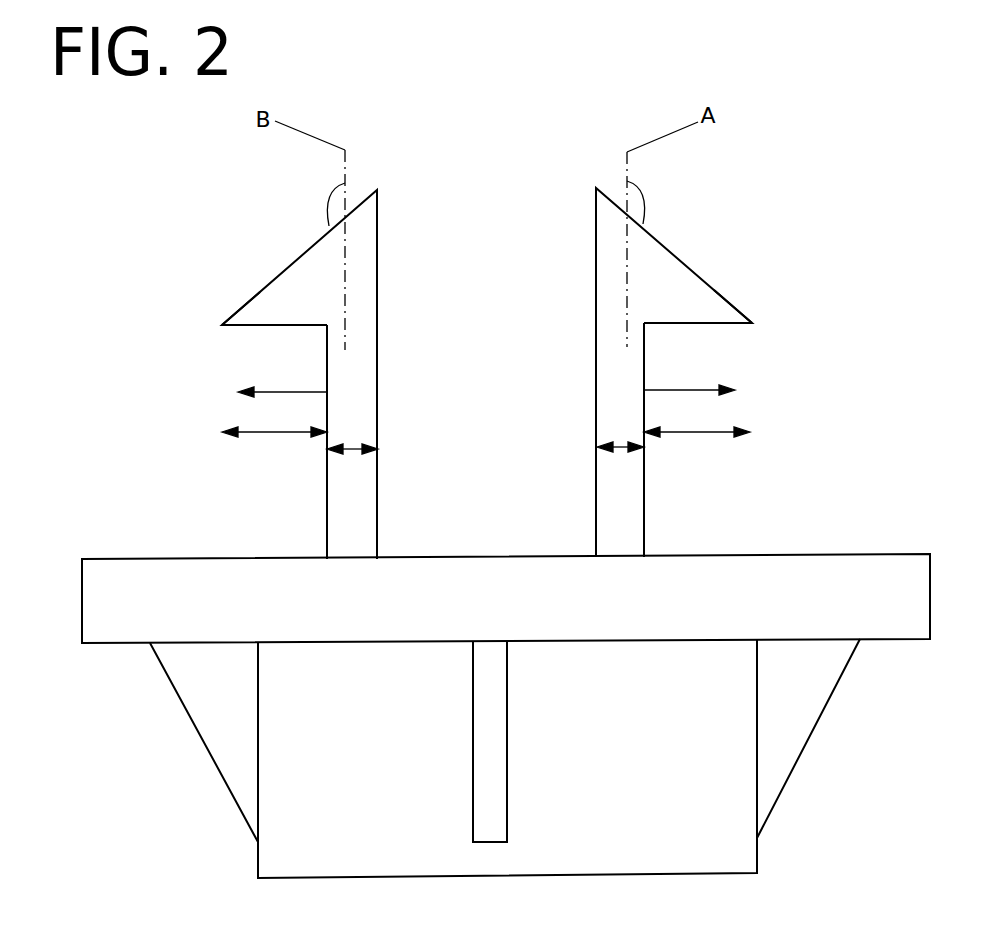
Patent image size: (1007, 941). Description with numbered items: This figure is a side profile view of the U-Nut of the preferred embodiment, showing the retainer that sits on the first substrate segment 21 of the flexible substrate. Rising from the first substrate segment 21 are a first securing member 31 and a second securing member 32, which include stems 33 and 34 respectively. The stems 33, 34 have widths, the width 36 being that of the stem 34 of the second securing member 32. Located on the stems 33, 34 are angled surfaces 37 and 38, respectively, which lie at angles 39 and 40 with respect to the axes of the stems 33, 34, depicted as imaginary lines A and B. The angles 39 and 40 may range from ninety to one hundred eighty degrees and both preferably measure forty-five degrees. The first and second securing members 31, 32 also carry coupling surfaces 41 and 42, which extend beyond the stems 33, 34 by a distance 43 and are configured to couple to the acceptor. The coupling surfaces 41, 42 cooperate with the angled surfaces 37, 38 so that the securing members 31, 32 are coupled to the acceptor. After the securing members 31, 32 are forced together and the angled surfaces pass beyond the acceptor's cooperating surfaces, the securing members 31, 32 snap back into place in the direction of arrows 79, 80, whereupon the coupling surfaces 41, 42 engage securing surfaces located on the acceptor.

The first substrate segment 21 is at (824, 580).
The first securing member 31 is at (590, 156).
The second securing member 32 is at (370, 156).
The stem 33 is at (633, 481).
The stem 34 is at (343, 484).
The width 36 is at (350, 452).
The angled surface 37 is at (742, 312).
The angled surface 38 is at (225, 313).
The angle 39 is at (645, 205).
The angle 40 is at (325, 207).
The coupling surface 41 is at (680, 325).
The coupling surface 42 is at (290, 328).
The distance 43 is at (253, 432).
The arrow 79 is at (705, 385).
The arrow 80 is at (272, 392).